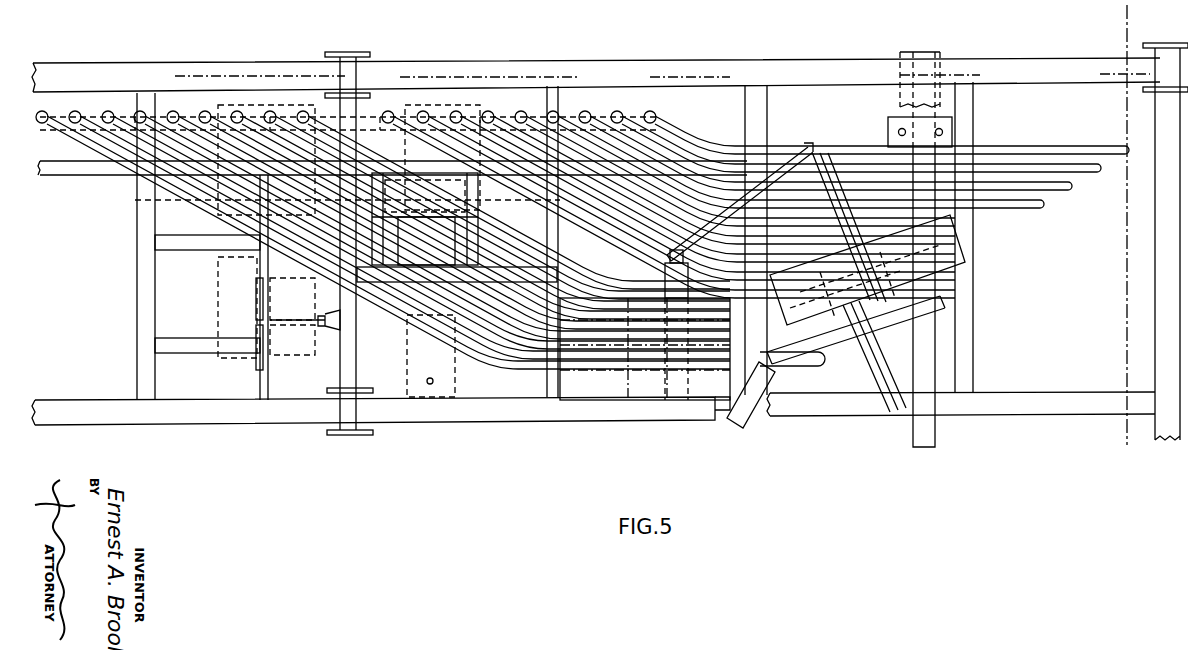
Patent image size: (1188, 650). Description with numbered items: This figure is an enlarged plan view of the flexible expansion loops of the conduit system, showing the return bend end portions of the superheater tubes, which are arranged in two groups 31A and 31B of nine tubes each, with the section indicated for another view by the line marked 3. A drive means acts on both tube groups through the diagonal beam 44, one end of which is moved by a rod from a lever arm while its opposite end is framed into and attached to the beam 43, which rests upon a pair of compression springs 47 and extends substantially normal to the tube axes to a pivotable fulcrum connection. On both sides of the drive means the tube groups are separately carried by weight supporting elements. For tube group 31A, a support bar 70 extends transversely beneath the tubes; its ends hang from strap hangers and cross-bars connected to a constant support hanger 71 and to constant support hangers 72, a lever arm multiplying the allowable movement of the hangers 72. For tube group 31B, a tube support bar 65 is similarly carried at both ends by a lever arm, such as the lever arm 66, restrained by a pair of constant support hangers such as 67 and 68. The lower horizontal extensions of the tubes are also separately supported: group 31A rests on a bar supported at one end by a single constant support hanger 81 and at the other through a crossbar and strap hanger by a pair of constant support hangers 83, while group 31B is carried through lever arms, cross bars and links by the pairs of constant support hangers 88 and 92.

The constant support hangers 92 is at (285, 108).
The constant support hangers 83 is at (465, 108).
The constant support hangers 72 is at (382, 160).
The constant support hanger 71 is at (296, 306).
The constant support hangers 88 is at (218, 290).
The support bar 70 is at (362, 318).
The constant support hanger 81 is at (455, 388).
The constant support hanger 67 is at (630, 380).
The lever arm 66 is at (690, 272).
The tube support bar 65 is at (666, 248).
The constant support hanger 68 is at (722, 410).
The diagonal beam 44 is at (752, 428).
The tube group 31A is at (851, 373).
The tube group 31B is at (1076, 213).
The beam 43 is at (936, 433).
The compression springs 47 is at (937, 128).
The section line 3- 3 is at (1143, 15).